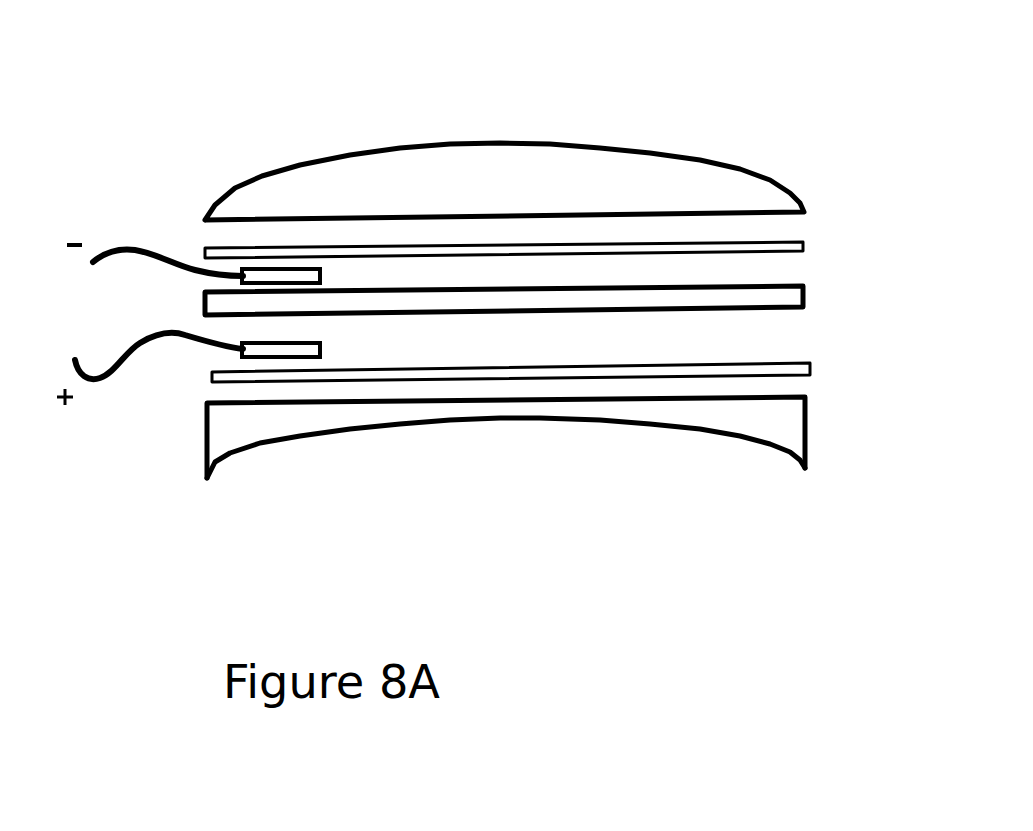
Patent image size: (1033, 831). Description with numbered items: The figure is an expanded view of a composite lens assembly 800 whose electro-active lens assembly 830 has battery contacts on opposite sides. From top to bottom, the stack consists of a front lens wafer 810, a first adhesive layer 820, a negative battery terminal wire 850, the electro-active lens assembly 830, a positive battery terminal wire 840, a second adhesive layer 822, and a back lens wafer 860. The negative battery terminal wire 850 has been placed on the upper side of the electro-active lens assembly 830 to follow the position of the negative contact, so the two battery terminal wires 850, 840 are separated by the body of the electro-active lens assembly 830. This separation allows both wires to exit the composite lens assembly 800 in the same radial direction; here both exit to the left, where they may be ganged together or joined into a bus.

The composite lens assembly 800 is at (867, 652).
The front lens wafer 810 is at (305, 200).
The first adhesive layer 820 is at (463, 247).
The second adhesive layer 822 is at (437, 373).
The electro-active lens assembly 830 is at (737, 295).
The positive battery terminal wire 840 is at (135, 368).
The negative battery terminal wire 850 is at (128, 235).
The back lens wafer 860 is at (648, 413).